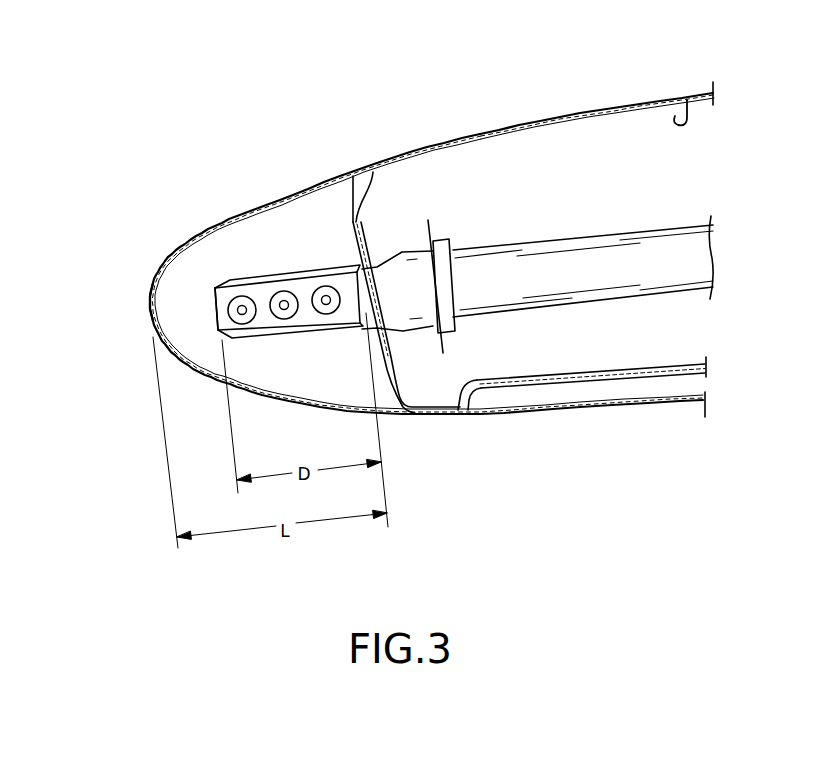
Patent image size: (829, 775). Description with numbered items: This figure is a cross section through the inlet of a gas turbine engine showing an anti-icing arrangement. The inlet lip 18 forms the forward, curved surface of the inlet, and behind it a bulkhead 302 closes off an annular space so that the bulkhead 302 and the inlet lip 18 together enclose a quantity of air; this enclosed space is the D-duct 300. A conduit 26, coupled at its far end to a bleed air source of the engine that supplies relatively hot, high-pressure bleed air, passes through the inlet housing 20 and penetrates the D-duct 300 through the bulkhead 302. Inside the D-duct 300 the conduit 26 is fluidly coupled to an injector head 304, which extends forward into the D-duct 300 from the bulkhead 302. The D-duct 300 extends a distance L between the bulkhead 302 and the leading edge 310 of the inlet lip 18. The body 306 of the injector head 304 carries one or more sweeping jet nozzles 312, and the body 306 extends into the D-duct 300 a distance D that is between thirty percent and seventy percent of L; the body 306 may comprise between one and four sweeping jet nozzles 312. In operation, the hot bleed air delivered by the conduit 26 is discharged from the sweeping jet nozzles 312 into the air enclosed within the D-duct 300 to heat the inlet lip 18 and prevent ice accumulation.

The D-duct 300 is at (362, 83).
The inlet lip 18 is at (323, 176).
The inlet housing 20 is at (578, 112).
The conduit 26 is at (620, 233).
The bulkhead 302 is at (370, 170).
The injector head 304 is at (260, 280).
The body 306 is at (217, 308).
The leading edge 310 is at (151, 323).
The sweeping jet nozzles 312 is at (327, 283).